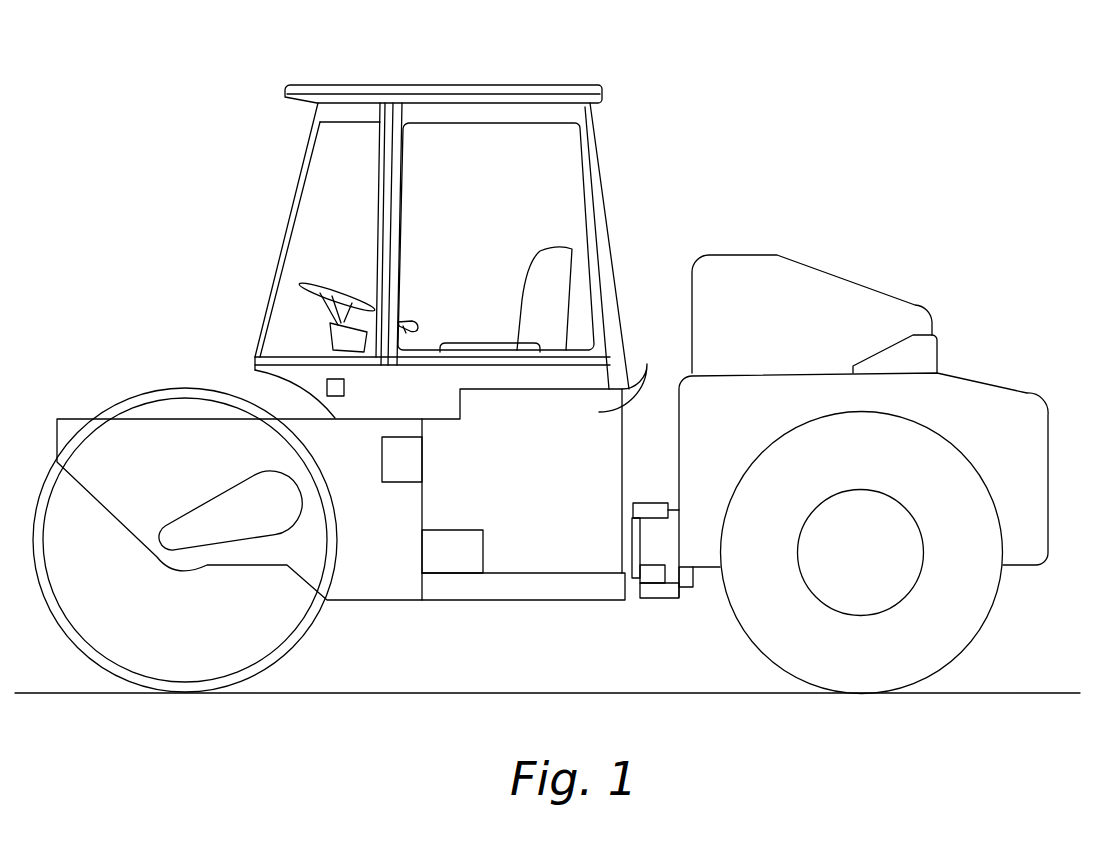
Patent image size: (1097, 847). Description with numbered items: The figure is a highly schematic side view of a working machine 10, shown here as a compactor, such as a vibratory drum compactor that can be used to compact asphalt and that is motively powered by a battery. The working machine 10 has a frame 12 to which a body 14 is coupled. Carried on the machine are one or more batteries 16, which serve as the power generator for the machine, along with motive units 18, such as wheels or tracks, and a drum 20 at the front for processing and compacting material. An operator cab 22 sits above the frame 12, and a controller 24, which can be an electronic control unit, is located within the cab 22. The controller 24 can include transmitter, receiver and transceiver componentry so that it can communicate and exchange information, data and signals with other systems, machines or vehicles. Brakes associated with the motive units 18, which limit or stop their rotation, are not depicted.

The working machine 10 is at (992, 80).
The frame 12 is at (478, 600).
The body 14 is at (980, 387).
The batteries 16 is at (807, 263).
The motive units 18 is at (863, 683).
The drum 20 is at (190, 388).
The cab 22 is at (460, 85).
The controller 24 is at (327, 380).